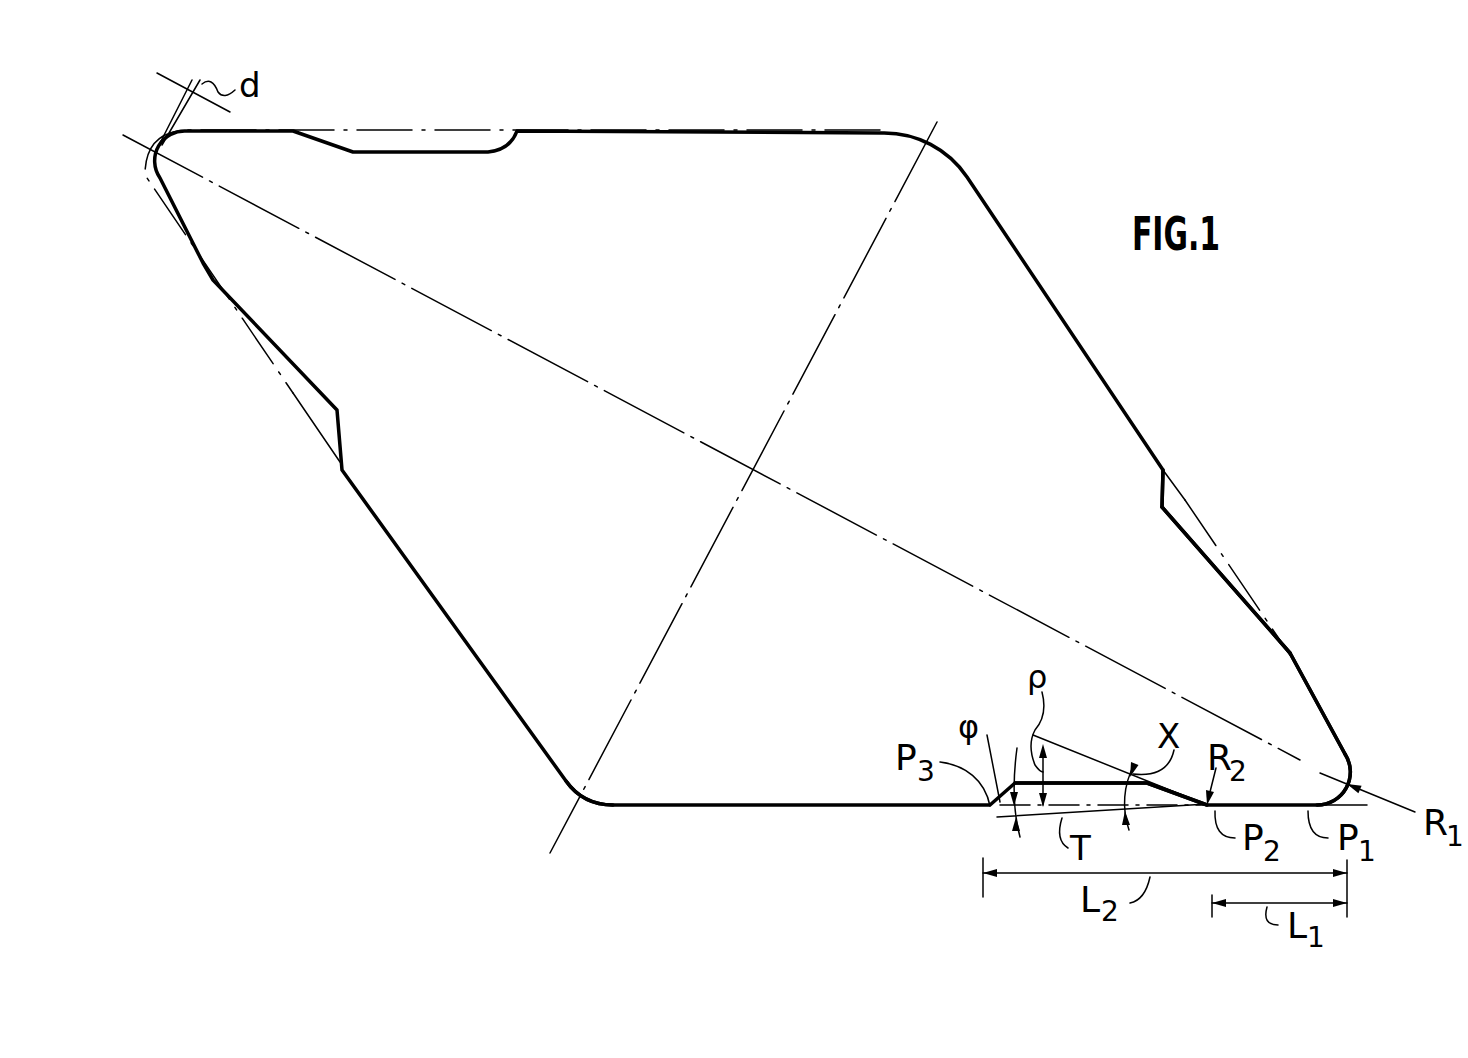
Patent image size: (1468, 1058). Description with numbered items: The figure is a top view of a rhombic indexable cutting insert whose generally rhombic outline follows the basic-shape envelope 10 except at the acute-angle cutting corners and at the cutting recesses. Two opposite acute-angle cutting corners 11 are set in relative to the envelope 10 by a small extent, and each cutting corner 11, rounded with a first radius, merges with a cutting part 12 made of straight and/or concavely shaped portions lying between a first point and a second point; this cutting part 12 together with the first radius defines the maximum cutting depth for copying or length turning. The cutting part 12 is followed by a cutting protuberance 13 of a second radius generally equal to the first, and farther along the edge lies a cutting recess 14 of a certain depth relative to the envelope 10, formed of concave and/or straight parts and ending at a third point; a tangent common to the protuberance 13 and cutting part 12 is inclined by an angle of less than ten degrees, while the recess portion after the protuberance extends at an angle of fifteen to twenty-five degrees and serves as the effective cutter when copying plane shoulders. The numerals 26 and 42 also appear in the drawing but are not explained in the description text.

The basic-shape envelope 10 is at (302, 413).
The acute-angle cutting corner 11 is at (1358, 752).
The cutting part 12 is at (1322, 707).
The cutting protuberance 13 is at (1290, 653).
The cutting recess 14 is at (1200, 560).
The chamfer face 26 is at (1075, 750).
The rounded corner 42 is at (588, 818).